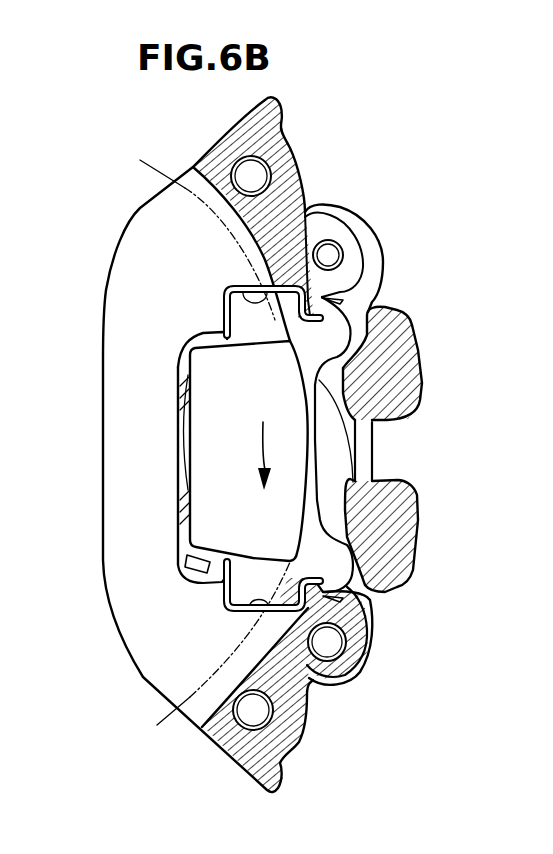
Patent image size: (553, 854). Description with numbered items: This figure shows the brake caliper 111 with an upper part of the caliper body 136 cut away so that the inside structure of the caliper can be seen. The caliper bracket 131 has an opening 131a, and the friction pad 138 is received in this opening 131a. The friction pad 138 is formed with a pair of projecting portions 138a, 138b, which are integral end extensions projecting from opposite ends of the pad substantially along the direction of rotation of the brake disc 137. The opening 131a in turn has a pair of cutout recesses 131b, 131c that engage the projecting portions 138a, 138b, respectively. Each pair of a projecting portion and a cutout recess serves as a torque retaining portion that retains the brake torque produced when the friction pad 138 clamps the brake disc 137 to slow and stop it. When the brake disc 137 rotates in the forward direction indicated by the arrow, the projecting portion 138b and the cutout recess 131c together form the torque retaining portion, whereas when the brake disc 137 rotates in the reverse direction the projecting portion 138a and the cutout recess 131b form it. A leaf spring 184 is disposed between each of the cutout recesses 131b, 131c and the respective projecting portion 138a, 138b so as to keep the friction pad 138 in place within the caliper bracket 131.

The brake caliper 111 is at (133, 207).
The caliper bracket 131 is at (133, 403).
The opening 131a is at (190, 546).
The cutout recess 131b is at (242, 285).
The cutout recess 131c is at (252, 625).
The caliper body 136 is at (421, 355).
The brake disc 137 is at (333, 158).
The friction pad 138 is at (287, 456).
The projecting portion 138a is at (253, 314).
The projecting portion 138b is at (250, 590).
The leaf spring 184 is at (343, 300).